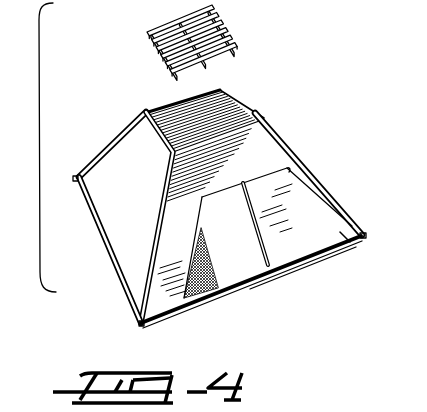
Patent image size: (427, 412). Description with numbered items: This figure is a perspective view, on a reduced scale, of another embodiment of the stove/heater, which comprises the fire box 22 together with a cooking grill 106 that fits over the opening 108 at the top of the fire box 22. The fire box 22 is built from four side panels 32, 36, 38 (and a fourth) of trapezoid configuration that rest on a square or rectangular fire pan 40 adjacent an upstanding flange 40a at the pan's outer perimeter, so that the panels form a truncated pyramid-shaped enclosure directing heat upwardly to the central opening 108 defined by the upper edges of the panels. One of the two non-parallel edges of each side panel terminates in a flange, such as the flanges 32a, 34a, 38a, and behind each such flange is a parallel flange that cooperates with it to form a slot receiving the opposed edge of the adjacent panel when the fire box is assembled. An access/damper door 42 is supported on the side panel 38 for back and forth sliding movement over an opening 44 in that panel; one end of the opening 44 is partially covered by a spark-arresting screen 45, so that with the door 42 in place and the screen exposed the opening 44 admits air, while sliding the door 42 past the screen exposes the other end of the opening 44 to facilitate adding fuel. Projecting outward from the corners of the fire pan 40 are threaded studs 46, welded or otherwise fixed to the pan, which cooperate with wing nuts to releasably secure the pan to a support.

The fire box 22 is at (256, 94).
The side panel 32 is at (136, 212).
The flange 32a is at (156, 247).
The flange 34a is at (118, 140).
The side panel 36 is at (264, 118).
The side panel 38 is at (180, 294).
The flange 38a is at (276, 140).
The fire pan 40 is at (291, 265).
The upstanding flange 40a is at (322, 255).
The access/damper door 42 is at (335, 228).
The opening 44 is at (214, 299).
The spark-arresting screen 45 is at (212, 258).
The threaded studs 46 is at (73, 178).
The cooking grill 106 is at (233, 30).
The opening 108 is at (240, 129).